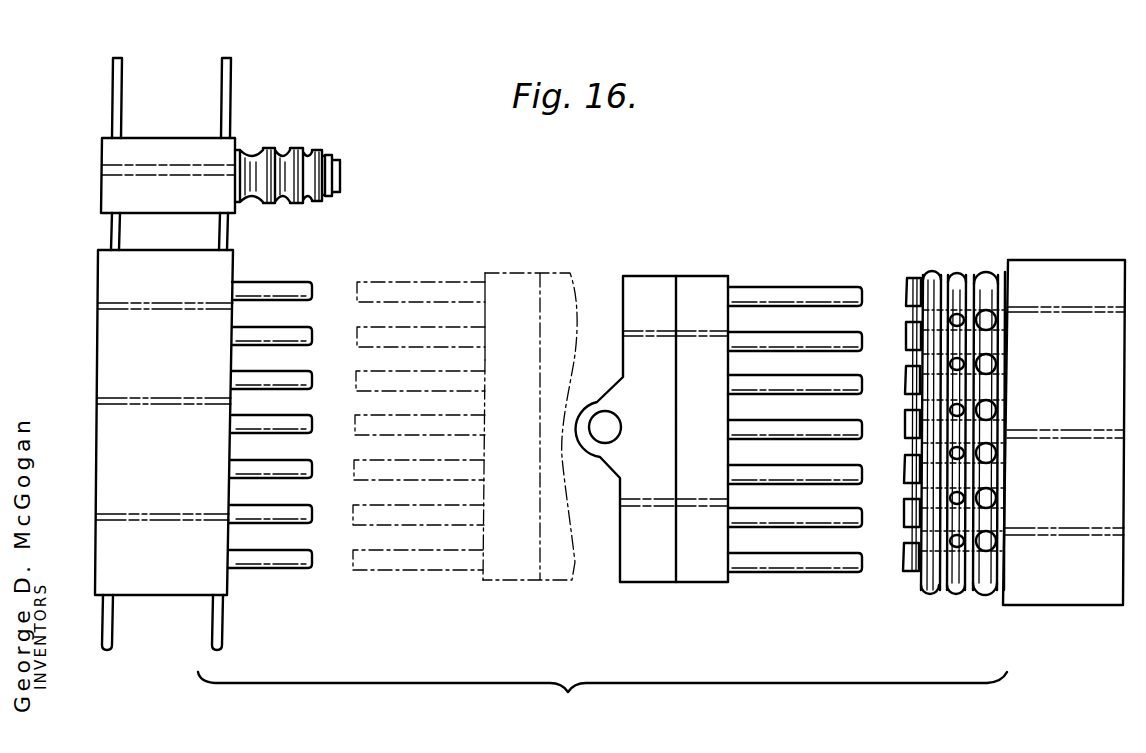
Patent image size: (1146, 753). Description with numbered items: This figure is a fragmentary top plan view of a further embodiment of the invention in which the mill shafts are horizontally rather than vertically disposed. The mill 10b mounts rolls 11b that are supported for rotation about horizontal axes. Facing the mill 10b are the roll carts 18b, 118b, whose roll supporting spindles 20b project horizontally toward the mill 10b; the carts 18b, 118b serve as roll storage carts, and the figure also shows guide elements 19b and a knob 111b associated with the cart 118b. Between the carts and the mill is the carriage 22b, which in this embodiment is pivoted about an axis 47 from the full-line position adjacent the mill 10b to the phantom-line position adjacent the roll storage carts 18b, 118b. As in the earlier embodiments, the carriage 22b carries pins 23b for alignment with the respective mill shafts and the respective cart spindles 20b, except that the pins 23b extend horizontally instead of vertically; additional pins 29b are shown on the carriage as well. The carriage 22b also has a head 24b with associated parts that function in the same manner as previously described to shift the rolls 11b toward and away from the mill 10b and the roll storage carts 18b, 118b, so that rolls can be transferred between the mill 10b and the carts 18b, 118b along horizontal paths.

The mill 10b is at (1080, 386).
The rolls 11b is at (905, 333).
The roll cart 18b is at (180, 386).
The guide rods 19b is at (222, 83).
The roll supporting spindles 20b is at (305, 330).
The carriage 22b is at (648, 277).
The pins 23b is at (797, 340).
The head 24b is at (715, 277).
The contact pins 29b is at (790, 477).
The axis 47 is at (607, 429).
The knob 111b is at (339, 161).
The roll cart 118b is at (175, 208).